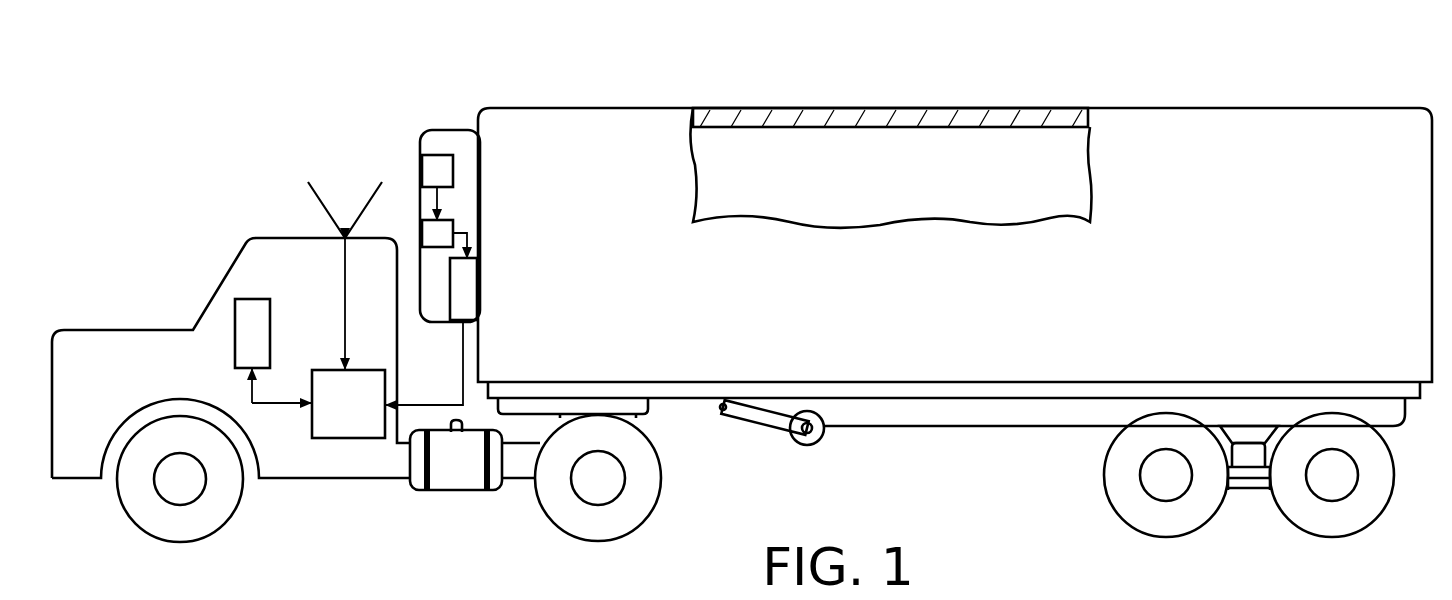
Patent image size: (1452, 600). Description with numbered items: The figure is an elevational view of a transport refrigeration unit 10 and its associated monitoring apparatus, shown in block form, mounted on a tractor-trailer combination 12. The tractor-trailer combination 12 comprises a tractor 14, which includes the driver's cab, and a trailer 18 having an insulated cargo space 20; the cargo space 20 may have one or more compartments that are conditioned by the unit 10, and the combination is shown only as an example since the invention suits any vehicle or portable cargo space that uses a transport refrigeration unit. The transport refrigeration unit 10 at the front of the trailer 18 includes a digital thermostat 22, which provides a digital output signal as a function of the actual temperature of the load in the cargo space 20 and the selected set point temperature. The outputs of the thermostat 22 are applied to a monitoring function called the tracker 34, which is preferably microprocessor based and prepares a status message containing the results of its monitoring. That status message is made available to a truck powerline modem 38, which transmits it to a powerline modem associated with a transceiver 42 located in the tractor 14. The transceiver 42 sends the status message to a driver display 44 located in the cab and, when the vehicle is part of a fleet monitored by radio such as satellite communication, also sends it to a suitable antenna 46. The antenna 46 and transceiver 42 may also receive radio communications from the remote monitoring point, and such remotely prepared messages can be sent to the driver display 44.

The transport refrigeration unit 10 is at (455, 130).
The tractor-trailer combination 12 is at (430, 543).
The tractor 14 is at (382, 482).
The trailer 18 is at (1173, 108).
The insulated cargo space 20 is at (1070, 187).
The digital thermostat 22 is at (421, 173).
The tracker 34 is at (421, 232).
The truck powerline modem 38 is at (472, 295).
The transceiver 42 is at (318, 437).
The driver display 44 is at (235, 341).
The antenna 46 is at (322, 201).